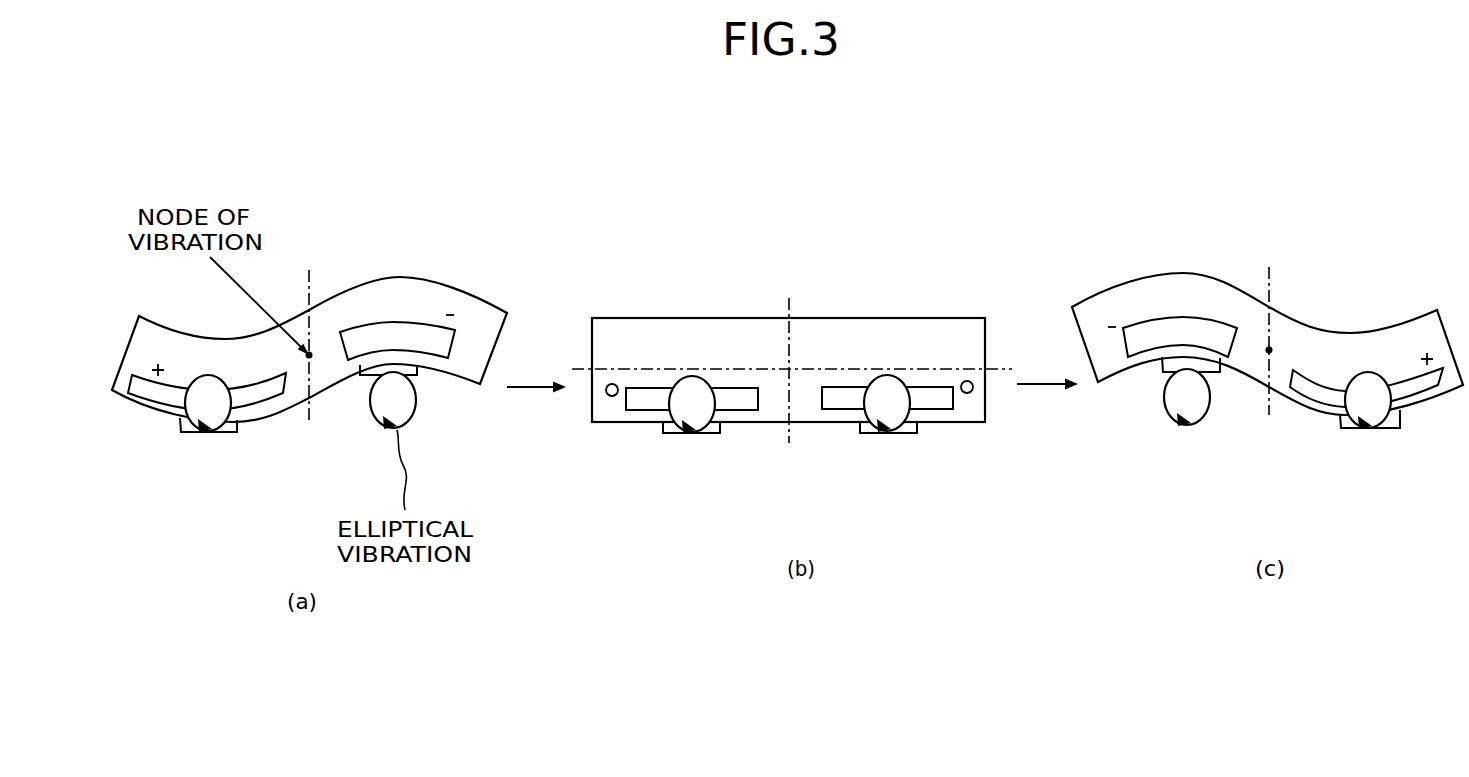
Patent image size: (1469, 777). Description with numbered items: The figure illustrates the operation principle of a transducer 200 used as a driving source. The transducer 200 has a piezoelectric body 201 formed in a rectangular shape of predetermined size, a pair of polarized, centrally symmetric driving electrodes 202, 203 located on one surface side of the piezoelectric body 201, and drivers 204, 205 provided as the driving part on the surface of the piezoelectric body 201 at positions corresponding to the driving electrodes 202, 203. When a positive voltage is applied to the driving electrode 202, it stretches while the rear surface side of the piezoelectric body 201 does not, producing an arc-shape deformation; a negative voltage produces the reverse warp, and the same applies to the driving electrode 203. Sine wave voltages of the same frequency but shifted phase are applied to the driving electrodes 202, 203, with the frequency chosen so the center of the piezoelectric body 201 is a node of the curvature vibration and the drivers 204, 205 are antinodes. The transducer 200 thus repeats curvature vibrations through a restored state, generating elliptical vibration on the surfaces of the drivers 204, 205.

The transducer 200 is at (358, 203).
The piezoelectric body 201 is at (417, 277).
The driving electrode 202 is at (148, 392).
The driving electrode 203 is at (437, 347).
The driver 204 is at (188, 435).
The driver 205 is at (367, 392).